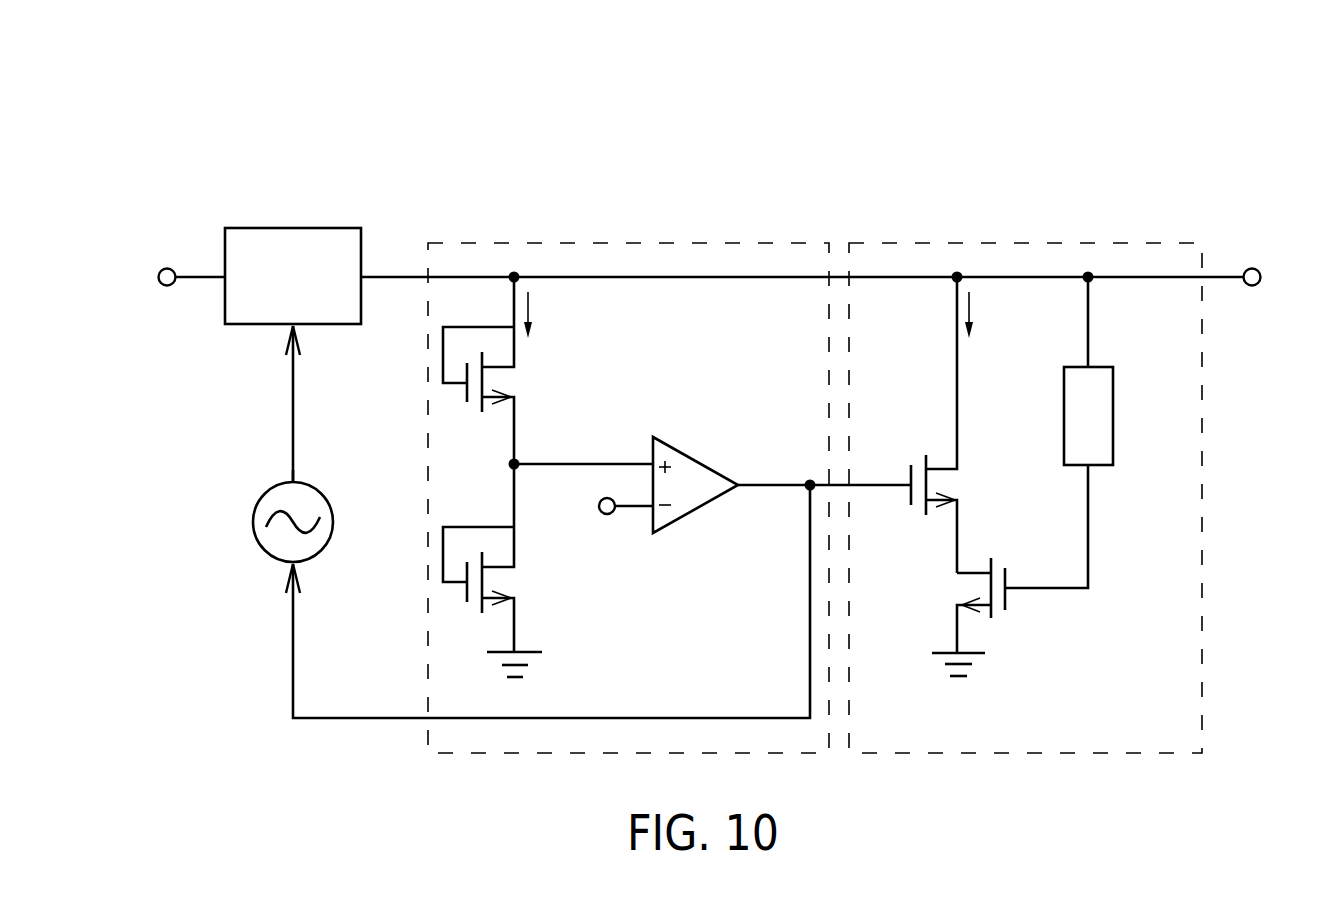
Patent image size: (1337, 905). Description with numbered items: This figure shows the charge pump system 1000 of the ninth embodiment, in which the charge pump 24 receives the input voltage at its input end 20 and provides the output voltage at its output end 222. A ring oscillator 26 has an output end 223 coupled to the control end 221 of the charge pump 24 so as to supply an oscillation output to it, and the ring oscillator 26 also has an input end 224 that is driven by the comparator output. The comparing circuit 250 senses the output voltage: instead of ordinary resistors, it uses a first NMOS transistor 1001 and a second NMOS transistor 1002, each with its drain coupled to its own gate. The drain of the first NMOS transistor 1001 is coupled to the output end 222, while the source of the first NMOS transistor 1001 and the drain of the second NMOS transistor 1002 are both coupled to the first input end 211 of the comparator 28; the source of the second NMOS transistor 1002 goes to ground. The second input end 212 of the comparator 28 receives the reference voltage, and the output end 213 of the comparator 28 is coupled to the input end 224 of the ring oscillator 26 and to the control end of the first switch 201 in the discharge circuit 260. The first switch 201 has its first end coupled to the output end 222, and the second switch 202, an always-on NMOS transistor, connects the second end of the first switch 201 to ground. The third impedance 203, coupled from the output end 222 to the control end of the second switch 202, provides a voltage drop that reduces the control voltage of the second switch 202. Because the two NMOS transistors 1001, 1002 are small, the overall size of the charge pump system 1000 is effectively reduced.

The charge pump system 1000 is at (1158, 108).
The input end 20 is at (167, 268).
The charge pump 24 is at (293, 228).
The output end 222 is at (362, 270).
The control end 221 is at (283, 337).
The output end 223 is at (292, 478).
The ring oscillator 26 is at (253, 522).
The input end 224 is at (290, 572).
The comparing circuit 250 is at (643, 242).
The first NMOS transistor 1001 is at (521, 378).
The second NMOS transistor 1002 is at (521, 578).
The comparator 28 is at (697, 457).
The first input end 211 is at (664, 447).
The second input end 212 is at (664, 524).
The output end 213 is at (741, 489).
The discharge circuit 260 is at (1023, 242).
The first switch 201 is at (918, 459).
The second switch 202 is at (1003, 565).
The third impedance 203 is at (1113, 415).